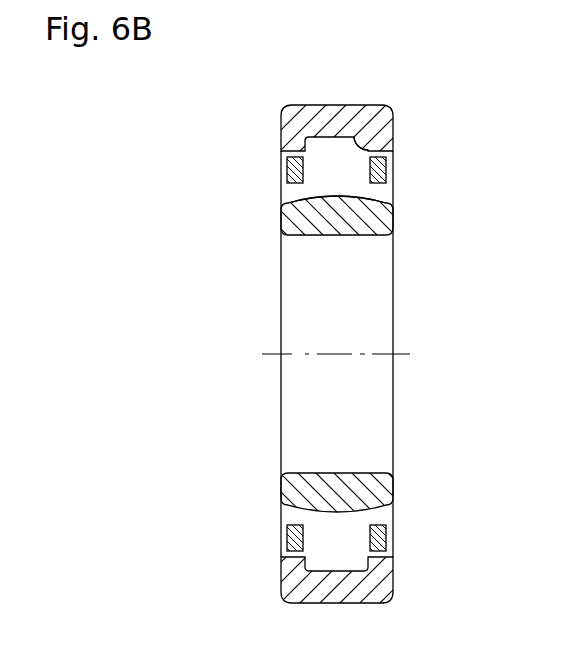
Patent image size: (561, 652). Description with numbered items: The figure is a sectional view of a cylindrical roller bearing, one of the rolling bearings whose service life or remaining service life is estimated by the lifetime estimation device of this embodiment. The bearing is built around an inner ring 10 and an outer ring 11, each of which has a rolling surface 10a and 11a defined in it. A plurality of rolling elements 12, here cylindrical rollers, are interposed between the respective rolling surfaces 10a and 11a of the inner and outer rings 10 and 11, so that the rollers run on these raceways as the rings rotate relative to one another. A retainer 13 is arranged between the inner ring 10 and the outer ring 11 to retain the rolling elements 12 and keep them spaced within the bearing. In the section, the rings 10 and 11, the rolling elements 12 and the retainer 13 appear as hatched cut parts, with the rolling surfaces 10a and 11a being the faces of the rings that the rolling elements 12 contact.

The inner ring 10 is at (383, 216).
The rolling surface 10a is at (326, 198).
The outer ring 11 is at (315, 115).
The rolling surface 11a is at (362, 142).
The rolling elements 12 is at (345, 537).
The retainer 13 is at (382, 170).